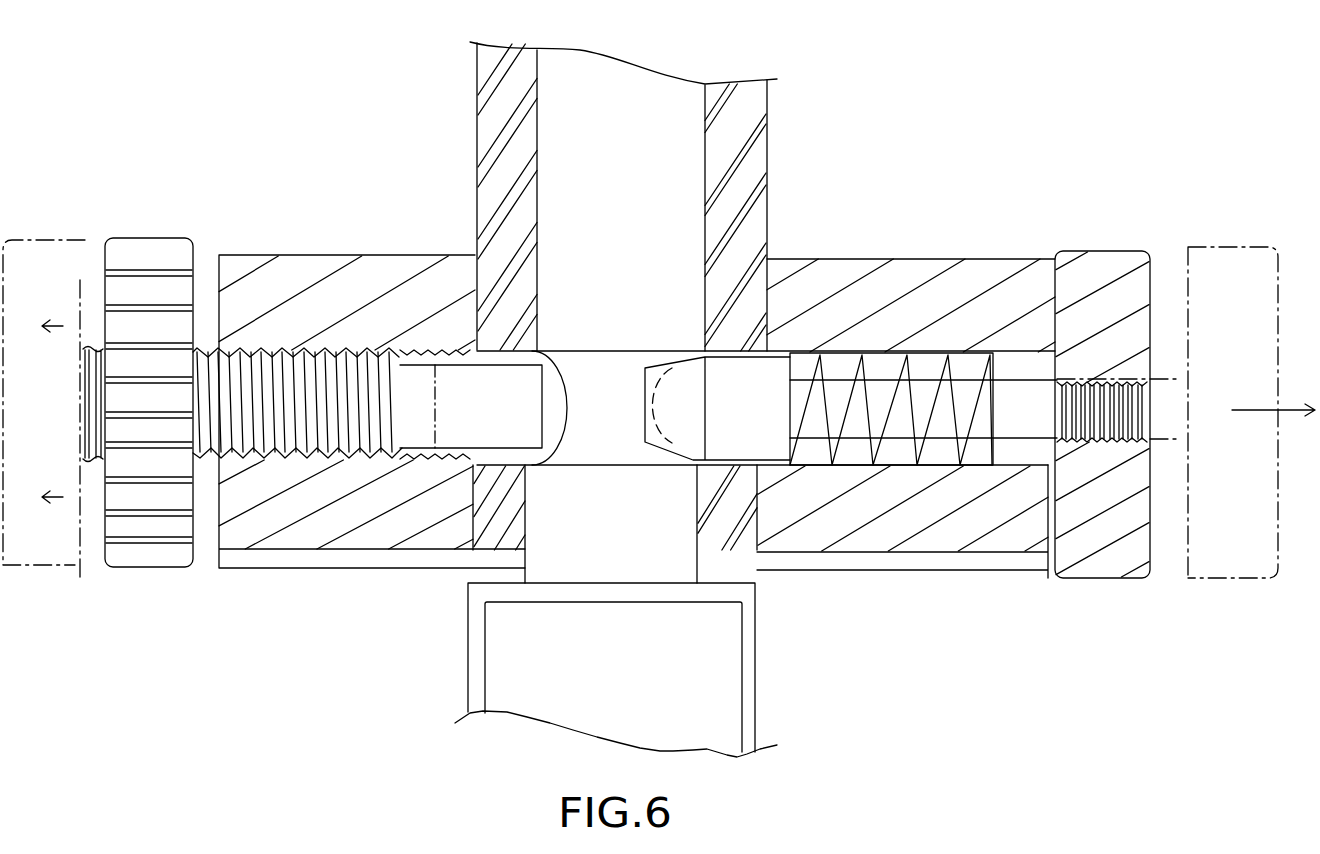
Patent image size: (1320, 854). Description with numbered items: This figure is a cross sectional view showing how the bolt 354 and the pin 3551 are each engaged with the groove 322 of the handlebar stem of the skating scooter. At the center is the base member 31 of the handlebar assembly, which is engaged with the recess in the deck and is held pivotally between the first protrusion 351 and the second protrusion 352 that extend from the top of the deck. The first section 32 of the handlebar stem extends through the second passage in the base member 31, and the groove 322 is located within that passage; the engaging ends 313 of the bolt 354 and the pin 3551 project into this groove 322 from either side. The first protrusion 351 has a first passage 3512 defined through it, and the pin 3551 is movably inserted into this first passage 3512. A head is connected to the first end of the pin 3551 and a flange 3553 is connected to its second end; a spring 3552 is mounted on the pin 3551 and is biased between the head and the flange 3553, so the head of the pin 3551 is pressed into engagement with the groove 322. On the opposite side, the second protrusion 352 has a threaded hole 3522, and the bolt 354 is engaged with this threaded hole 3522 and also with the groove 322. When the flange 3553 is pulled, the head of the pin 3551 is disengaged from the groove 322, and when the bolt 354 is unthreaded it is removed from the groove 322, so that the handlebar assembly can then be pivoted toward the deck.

The base member 31 is at (748, 175).
The first section 32 is at (643, 133).
The positioning pin 313 is at (497, 358).
The groove 322 is at (600, 382).
The first protrusion 351 is at (983, 285).
The first passage 3512 is at (973, 368).
The second protrusion 352 is at (330, 278).
The threaded hole 3522 is at (432, 450).
The bolt 354 is at (160, 268).
The pin 3551 is at (1030, 410).
The spring 3552 is at (927, 457).
The flange 3553 is at (1117, 283).